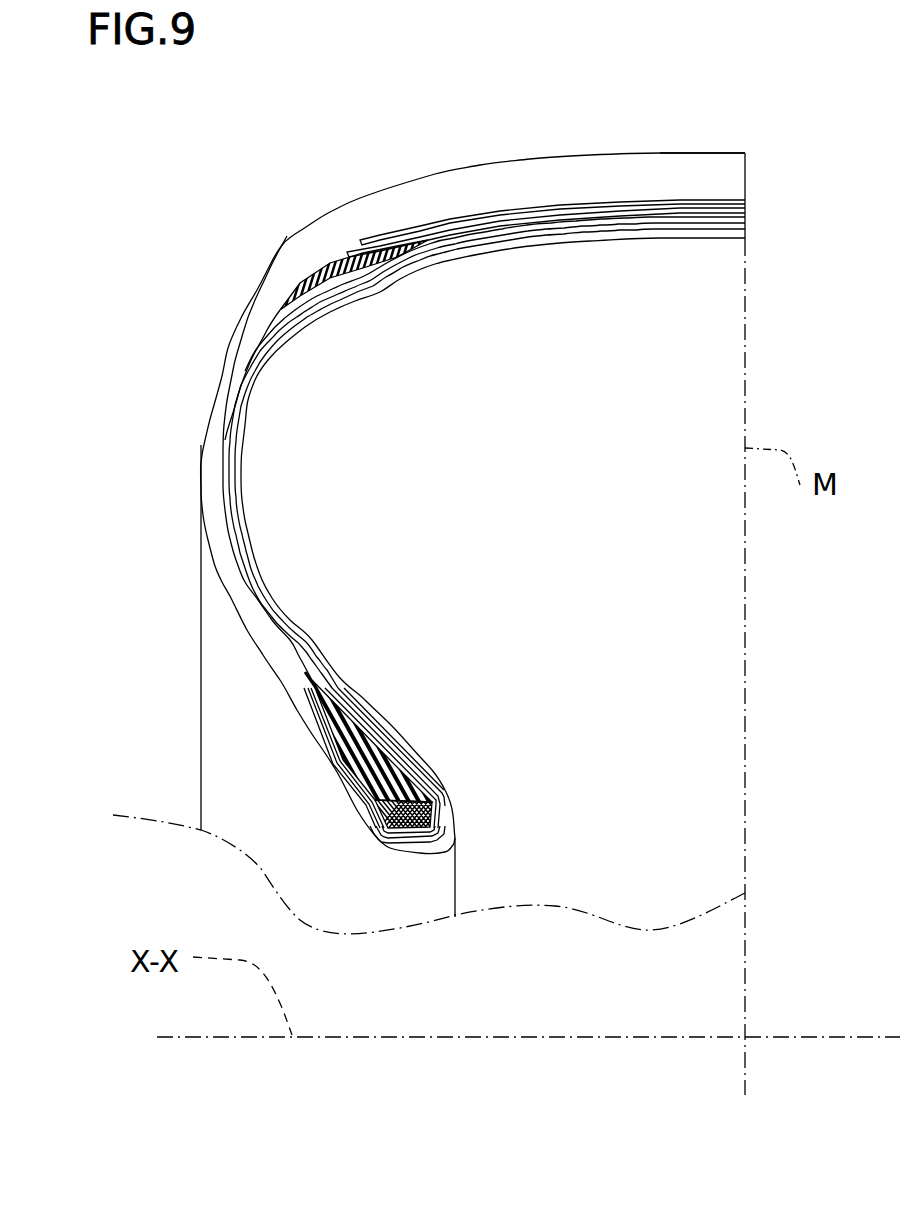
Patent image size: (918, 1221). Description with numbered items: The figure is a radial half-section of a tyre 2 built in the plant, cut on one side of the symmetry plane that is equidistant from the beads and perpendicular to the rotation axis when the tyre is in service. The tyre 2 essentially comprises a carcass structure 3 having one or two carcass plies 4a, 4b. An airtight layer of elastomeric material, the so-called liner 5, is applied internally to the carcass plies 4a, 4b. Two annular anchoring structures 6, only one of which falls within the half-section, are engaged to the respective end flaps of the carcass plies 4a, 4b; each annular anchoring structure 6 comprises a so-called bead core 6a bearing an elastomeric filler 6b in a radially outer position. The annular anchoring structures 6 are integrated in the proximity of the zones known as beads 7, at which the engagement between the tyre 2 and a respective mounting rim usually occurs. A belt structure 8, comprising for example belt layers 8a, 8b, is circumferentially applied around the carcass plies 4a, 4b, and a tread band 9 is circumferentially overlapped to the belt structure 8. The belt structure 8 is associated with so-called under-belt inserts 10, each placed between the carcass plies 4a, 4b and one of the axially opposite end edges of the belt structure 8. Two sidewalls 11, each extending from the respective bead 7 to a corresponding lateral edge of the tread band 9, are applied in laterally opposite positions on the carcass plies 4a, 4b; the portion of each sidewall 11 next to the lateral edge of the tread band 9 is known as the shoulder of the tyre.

The tyre 2 is at (252, 183).
The carcass structure 3 is at (220, 455).
The carcass ply 4a is at (258, 600).
The carcass ply 4b is at (258, 600).
The liner 5 is at (545, 237).
The annular anchoring structure 6 is at (389, 741).
The bead core 6a is at (433, 812).
The elastomeric filler 6b is at (368, 753).
The bead 7 is at (424, 763).
The belt structure 8 is at (557, 144).
The belt layer 8a is at (553, 208).
The belt layer 8b is at (553, 210).
The tread band 9 is at (647, 178).
The under-belt insert 10 is at (333, 263).
The sidewall 11 is at (230, 378).